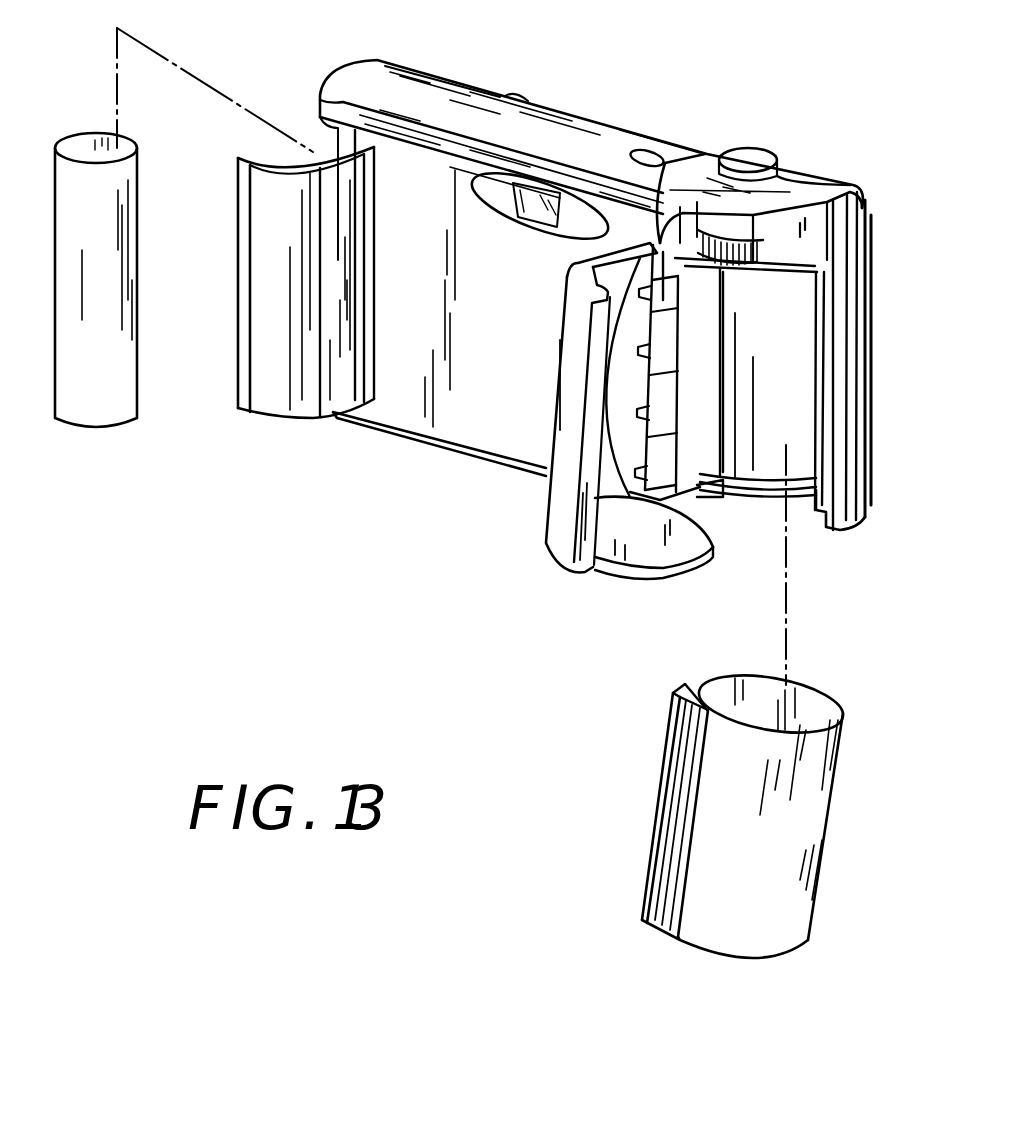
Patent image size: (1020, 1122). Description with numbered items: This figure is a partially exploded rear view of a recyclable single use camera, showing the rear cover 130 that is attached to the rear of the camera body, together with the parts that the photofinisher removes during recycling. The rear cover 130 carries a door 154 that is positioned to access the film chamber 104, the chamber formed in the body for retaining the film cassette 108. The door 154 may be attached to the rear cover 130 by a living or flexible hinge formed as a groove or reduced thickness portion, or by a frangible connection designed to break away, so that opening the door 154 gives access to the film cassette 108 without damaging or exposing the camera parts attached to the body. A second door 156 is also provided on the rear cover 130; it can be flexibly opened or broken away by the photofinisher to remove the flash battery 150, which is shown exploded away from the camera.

The film chamber 104 is at (807, 402).
The film cassette 108 is at (837, 773).
The rear cover 130 is at (490, 427).
The flash battery 150 is at (108, 410).
The door 154 is at (657, 569).
The second door 156 is at (292, 396).